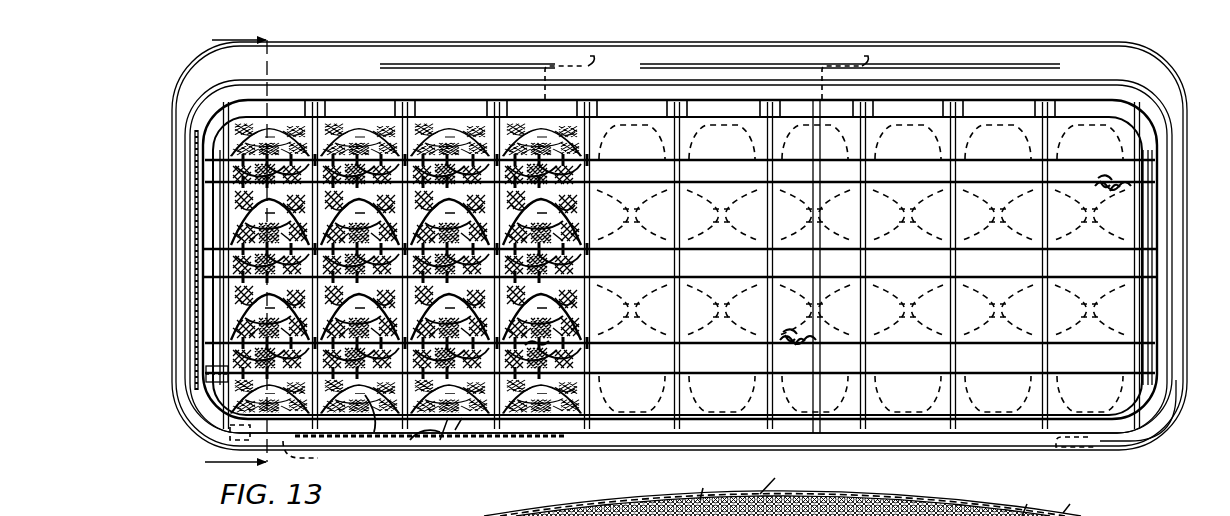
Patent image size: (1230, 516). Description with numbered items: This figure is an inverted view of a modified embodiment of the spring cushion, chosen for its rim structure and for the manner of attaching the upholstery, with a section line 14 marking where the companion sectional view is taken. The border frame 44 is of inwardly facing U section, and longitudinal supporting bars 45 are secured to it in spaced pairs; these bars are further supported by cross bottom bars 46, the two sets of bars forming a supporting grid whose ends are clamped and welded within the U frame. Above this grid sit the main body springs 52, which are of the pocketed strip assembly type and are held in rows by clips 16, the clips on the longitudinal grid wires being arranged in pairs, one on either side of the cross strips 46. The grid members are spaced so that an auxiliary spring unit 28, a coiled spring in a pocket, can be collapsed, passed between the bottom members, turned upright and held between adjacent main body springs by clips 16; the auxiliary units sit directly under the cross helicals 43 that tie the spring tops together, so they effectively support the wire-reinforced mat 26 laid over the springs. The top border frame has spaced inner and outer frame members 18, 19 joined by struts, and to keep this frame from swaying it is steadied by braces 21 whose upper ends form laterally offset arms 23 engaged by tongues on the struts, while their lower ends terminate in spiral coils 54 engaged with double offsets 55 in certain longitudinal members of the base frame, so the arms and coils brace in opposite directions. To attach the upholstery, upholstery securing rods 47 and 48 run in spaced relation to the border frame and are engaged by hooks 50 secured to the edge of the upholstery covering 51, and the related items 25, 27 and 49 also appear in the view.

The section line 14- 14 is at (223, 252).
The clips 16 is at (218, 238).
The inner frame member 18 is at (812, 502).
The outer frame member 19 is at (1075, 492).
The braces 21 is at (818, 259).
The laterally offset arms 23 is at (595, 60).
The bottom band 25 is at (720, 478).
The mat 26 is at (1033, 487).
The bottom band padding 27 is at (790, 475).
The auxiliary spring unit 28 is at (374, 400).
The cross helicals 43 is at (548, 263).
The border frame 44 is at (542, 440).
The longitudinal supporting bars 45 is at (1018, 274).
The cross bottom bars 46 is at (764, 263).
The upholstery securing rod 47 is at (1060, 120).
The upholstery securing rod 48 is at (1123, 420).
The side rail 49 is at (1140, 306).
The hooks 50 is at (210, 398).
The upholstery covering 51 is at (192, 318).
The main body springs 52 is at (421, 446).
The spiral coils 54 is at (560, 345).
The double offsets 55 is at (790, 334).